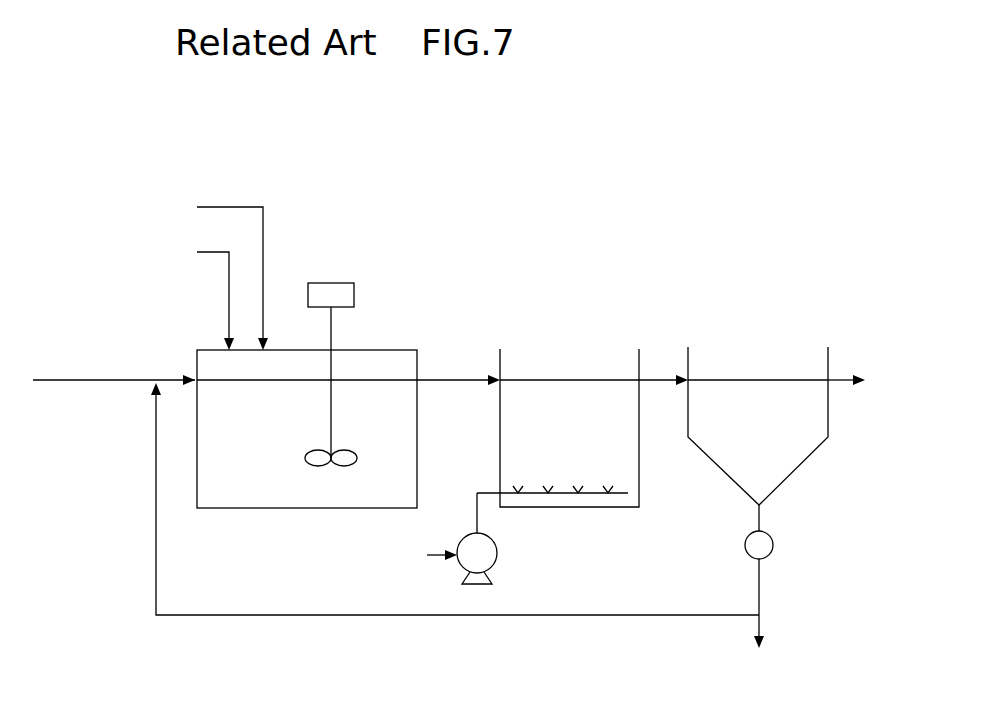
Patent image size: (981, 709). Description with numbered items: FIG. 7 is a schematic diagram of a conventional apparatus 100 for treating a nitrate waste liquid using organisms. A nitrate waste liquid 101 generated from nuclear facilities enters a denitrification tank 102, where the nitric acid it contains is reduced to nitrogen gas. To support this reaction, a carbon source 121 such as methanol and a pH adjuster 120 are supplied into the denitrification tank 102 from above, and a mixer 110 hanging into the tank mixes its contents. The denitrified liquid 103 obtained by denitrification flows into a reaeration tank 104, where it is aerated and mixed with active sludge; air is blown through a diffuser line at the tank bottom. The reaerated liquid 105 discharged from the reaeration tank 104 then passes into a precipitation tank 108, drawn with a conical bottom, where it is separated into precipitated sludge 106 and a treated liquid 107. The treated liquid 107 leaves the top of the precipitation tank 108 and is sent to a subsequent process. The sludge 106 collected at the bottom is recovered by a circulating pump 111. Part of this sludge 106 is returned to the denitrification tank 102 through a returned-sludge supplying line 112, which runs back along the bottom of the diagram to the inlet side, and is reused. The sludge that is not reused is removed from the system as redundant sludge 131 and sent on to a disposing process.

The conventional apparatus for treating a nitrate waste liquid 100 is at (608, 168).
The nitrate waste liquid 101 is at (145, 370).
The denitrification tank 102 is at (306, 222).
The denitrified liquid 103 is at (458, 365).
The reaeration tank 104 is at (568, 287).
The reaerated liquid 105 is at (669, 365).
The precipitated sludge 106 is at (771, 575).
The treated liquid 107 is at (868, 381).
The precipitation tank 108 is at (790, 285).
The mixer 110 is at (320, 283).
The circulating pump 111 is at (773, 545).
The returned-sludge supplying line 112 is at (466, 615).
The pH adjuster 120 is at (210, 274).
The carbon source 121 is at (193, 296).
The redundant sludge 131 is at (761, 619).